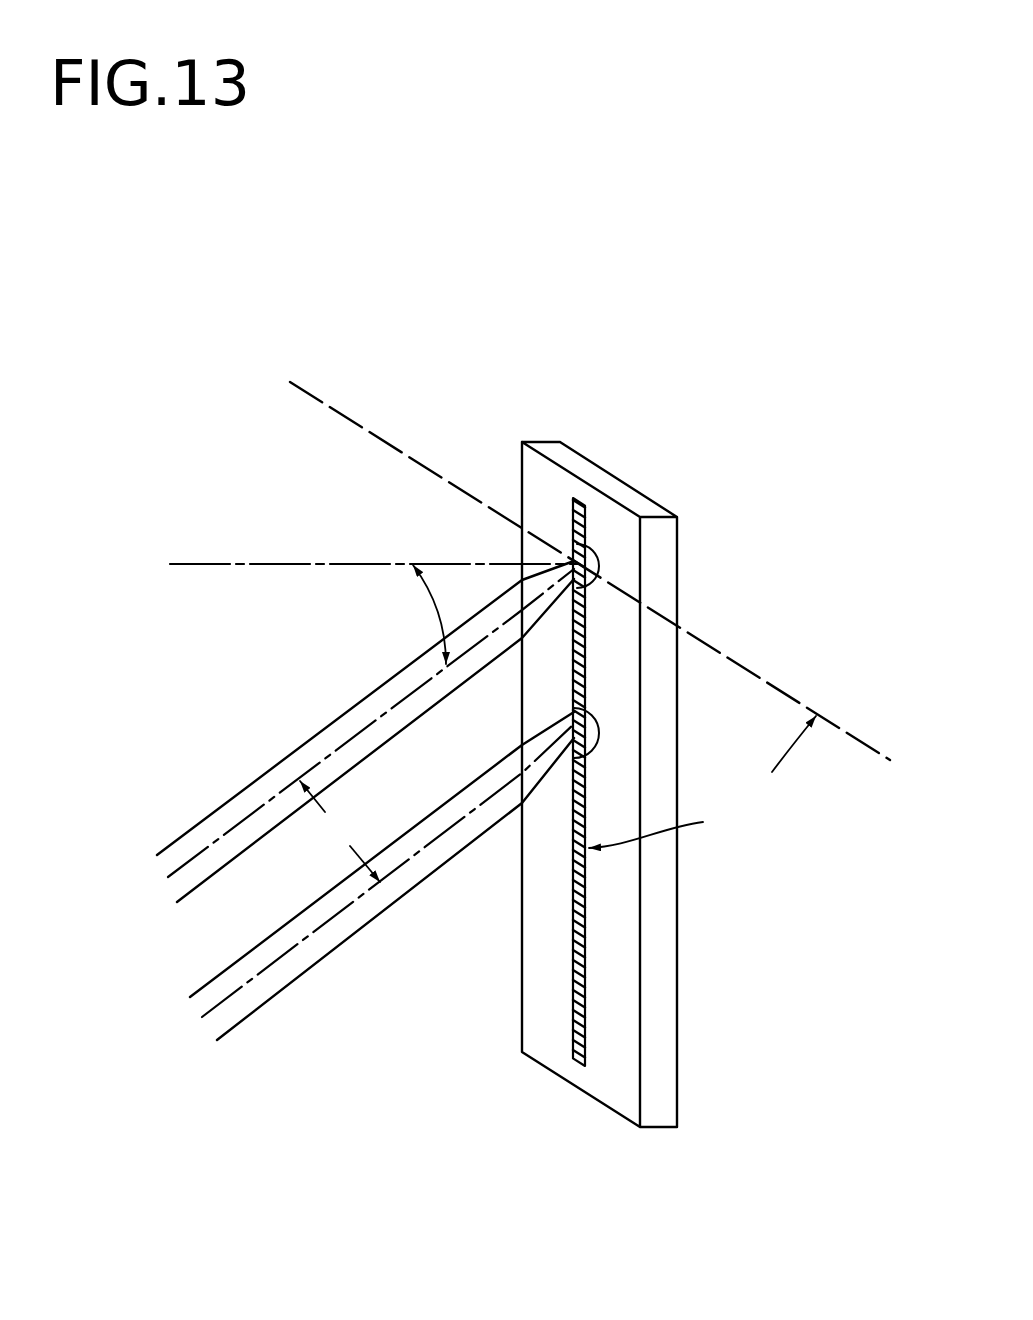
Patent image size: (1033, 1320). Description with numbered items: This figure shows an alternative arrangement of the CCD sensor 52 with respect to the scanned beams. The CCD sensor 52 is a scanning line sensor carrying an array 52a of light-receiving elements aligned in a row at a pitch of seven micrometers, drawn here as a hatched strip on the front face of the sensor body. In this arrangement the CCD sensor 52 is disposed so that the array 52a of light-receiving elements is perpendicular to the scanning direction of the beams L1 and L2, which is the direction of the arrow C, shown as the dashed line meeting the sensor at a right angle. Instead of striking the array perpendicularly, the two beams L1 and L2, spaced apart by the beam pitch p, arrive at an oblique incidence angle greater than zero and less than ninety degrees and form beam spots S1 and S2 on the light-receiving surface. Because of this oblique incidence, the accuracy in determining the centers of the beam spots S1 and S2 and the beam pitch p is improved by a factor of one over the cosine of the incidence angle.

The CCD sensor 52 is at (672, 548).
The array of light-receiving elements 52a is at (579, 993).
The beam spot S1 is at (600, 553).
The beam spot S2 is at (599, 731).
The beam L1 is at (208, 815).
The beam L2 is at (230, 967).
The arrow indicating scanning direction C is at (572, 553).
The beam pitch p is at (340, 831).